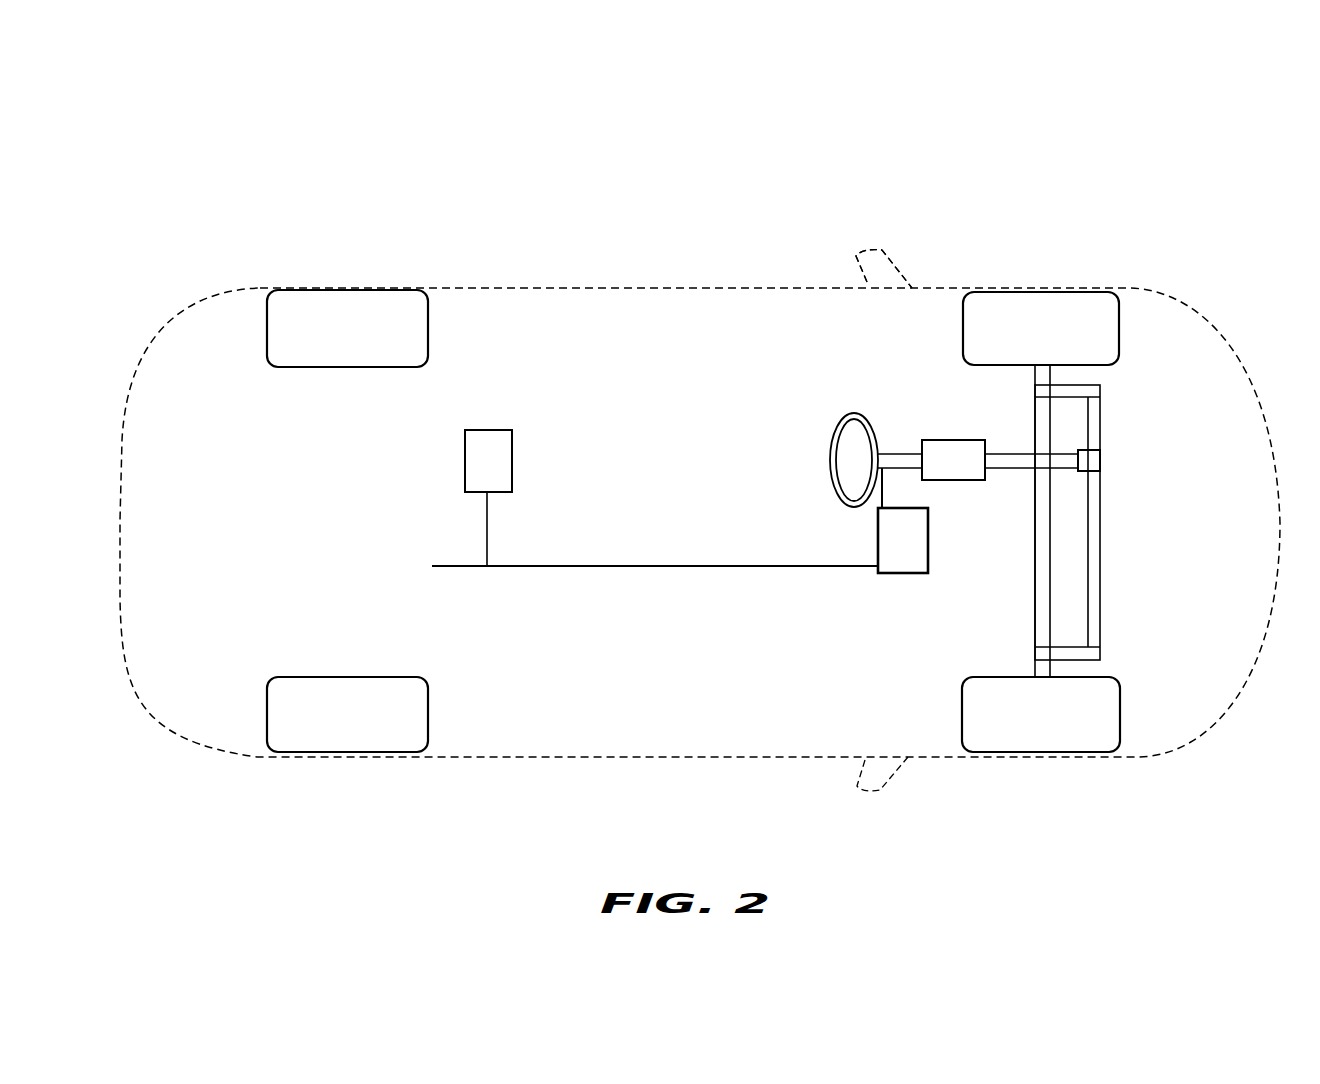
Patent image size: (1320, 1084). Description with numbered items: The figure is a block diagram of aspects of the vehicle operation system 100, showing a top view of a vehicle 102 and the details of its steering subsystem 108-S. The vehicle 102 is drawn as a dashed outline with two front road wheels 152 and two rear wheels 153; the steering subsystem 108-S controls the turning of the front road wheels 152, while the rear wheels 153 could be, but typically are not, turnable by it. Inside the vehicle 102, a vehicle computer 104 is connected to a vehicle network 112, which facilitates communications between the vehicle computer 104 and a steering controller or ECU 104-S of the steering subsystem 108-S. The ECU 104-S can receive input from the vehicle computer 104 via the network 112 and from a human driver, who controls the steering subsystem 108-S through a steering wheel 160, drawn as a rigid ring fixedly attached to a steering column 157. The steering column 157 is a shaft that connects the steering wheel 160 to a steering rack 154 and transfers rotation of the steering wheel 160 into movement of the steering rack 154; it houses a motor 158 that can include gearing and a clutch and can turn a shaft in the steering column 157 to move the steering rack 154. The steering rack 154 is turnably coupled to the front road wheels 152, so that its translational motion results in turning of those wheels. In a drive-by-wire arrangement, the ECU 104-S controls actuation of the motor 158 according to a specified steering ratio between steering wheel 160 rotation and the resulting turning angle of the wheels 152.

The vehicle operation system 100 is at (369, 500).
The vehicle 102 is at (1203, 143).
The vehicle computer 104 is at (488, 428).
The ECU 104-S is at (877, 538).
The steering subsystem 108-S is at (992, 230).
The vehicle network 112 is at (617, 568).
The front road wheels 152 is at (1077, 300).
The rear wheels 153 is at (383, 303).
The steering rack 154 is at (1102, 538).
The steering column 157 is at (1005, 450).
The motor 158 is at (930, 440).
The steering wheel 160 is at (832, 437).